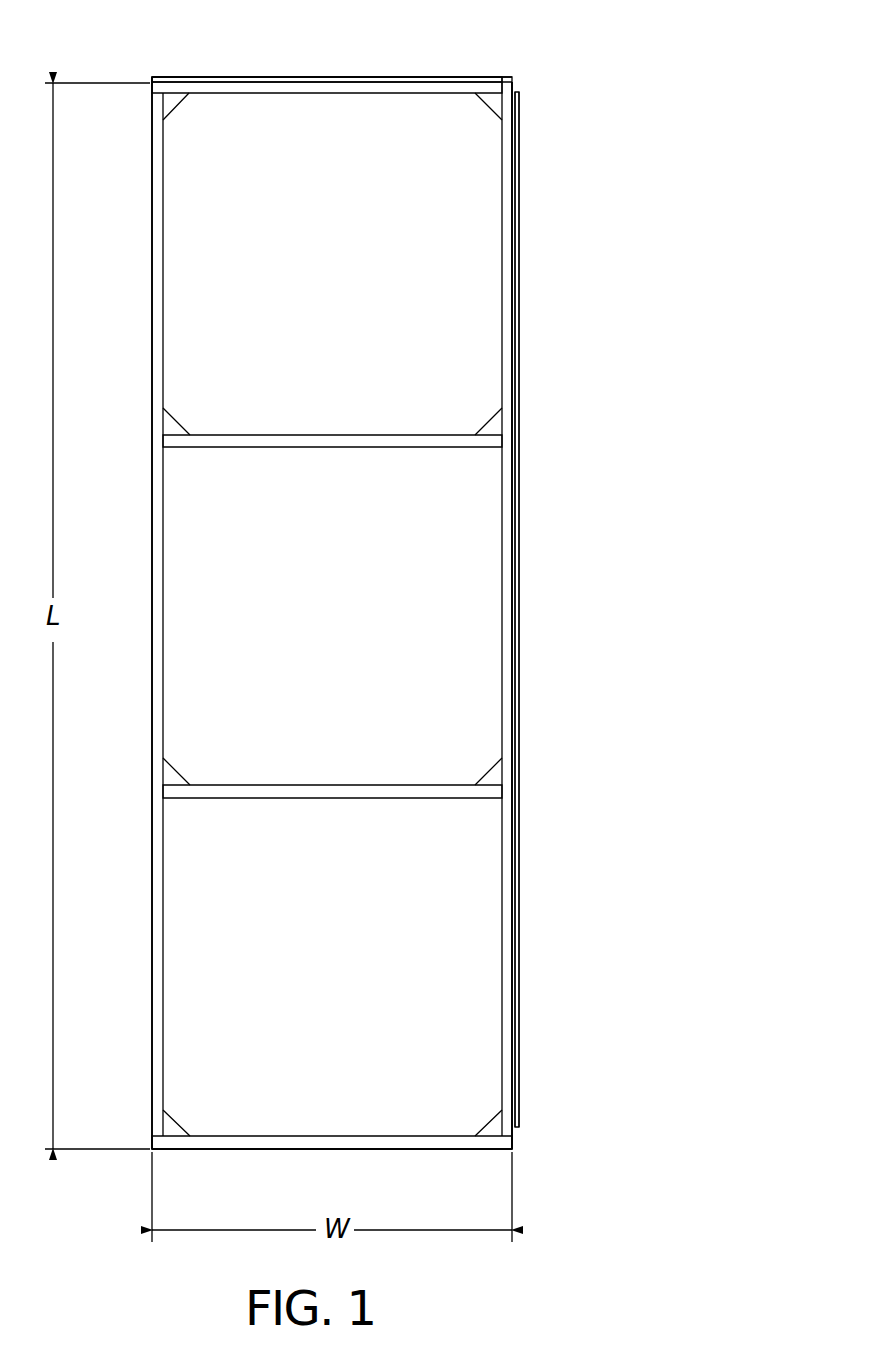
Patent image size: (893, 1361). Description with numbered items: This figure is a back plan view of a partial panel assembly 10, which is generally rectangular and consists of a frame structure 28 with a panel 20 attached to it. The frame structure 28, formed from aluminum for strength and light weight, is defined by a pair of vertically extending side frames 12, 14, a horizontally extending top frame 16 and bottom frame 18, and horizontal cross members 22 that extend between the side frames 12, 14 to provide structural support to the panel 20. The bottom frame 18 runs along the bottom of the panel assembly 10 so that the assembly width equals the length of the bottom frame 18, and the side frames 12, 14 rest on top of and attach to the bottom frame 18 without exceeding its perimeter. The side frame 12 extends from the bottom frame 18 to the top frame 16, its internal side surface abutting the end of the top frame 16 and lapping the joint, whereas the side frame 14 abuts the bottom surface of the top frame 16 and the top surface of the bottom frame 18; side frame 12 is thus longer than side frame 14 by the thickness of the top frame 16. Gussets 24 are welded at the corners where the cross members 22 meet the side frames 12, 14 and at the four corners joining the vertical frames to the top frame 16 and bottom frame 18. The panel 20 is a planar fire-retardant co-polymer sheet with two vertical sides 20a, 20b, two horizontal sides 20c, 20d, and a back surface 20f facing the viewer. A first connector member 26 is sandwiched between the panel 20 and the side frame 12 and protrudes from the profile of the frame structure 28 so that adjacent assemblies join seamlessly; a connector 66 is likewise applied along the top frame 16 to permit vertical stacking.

The panel assembly 10 is at (638, 240).
The side frame 12 is at (511, 622).
The side frame 14 is at (158, 256).
The top frame 16 is at (354, 90).
The bottom frame 18 is at (447, 1150).
The panel 20 is at (190, 957).
The vertical side 20a is at (150, 505).
The vertical side 20b is at (520, 89).
The horizontal side 20c is at (345, 1150).
The horizontal side 20d is at (494, 77).
The back surface 20f is at (332, 300).
The horizontal cross member 22 is at (320, 447).
The gusset 24 is at (493, 103).
The first connector member 26 is at (517, 898).
The frame structure 28 is at (507, 818).
The top strip 66 is at (440, 77).